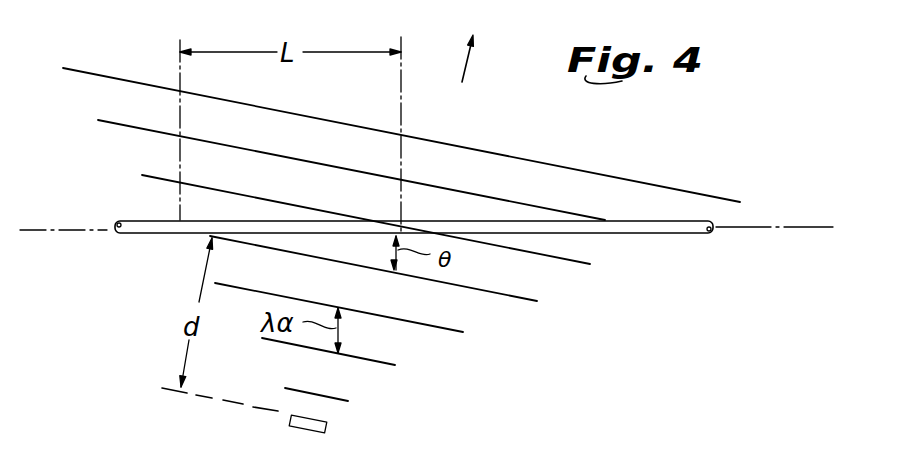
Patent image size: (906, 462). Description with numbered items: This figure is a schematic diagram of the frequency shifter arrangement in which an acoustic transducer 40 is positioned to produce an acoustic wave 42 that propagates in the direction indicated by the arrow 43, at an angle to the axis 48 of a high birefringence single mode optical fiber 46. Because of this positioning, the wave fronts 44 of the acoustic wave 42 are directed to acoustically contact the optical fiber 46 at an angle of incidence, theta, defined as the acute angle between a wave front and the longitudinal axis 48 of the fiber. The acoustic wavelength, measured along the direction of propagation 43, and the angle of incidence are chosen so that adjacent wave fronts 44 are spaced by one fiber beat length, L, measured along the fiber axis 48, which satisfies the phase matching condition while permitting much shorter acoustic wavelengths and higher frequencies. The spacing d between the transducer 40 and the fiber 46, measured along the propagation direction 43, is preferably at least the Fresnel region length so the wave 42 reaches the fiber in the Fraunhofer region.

The acoustic transducer 40 is at (327, 428).
The acoustic wave 42 is at (512, 146).
The arrow indicating direction of propagation 43 is at (470, 66).
The wave fronts 44 is at (443, 189).
The high birefringence single mode optical fiber 46 is at (700, 233).
The fiber axis 48 is at (47, 231).